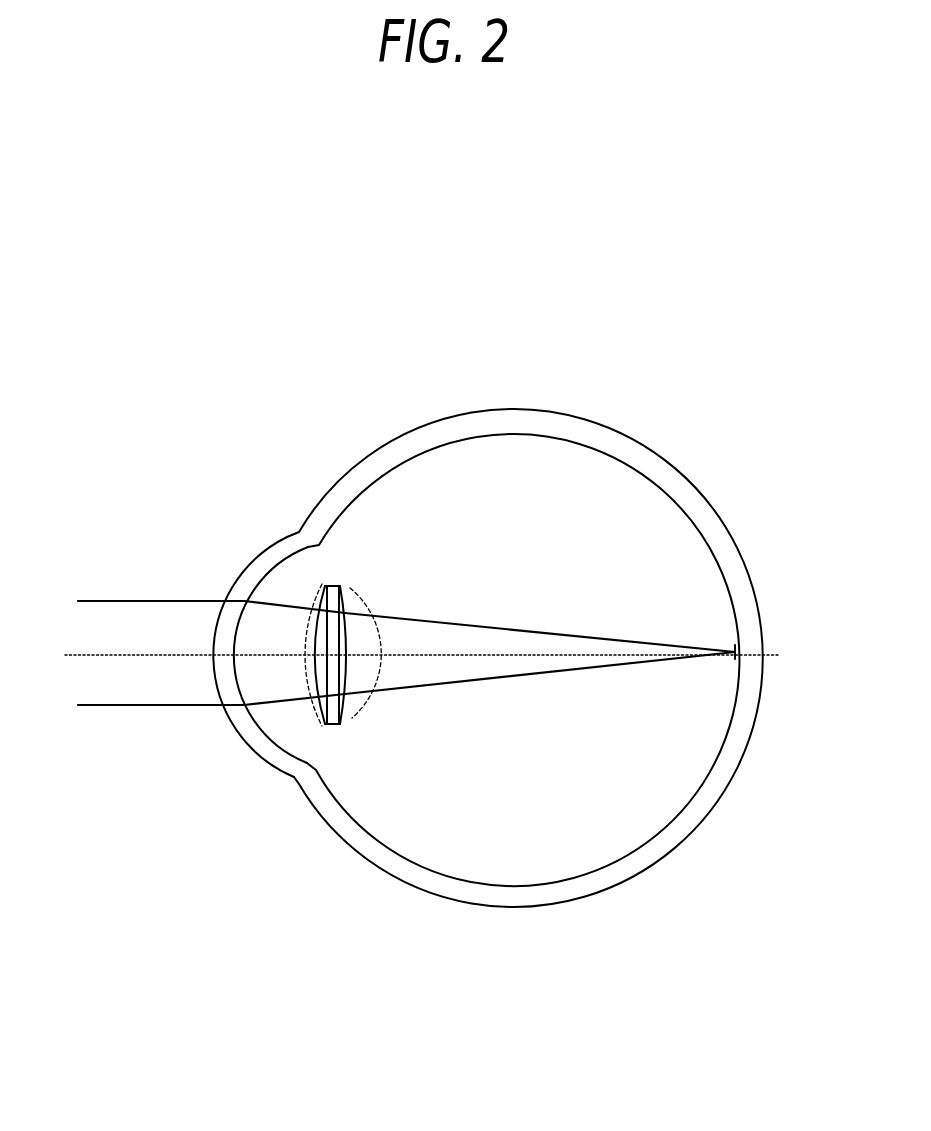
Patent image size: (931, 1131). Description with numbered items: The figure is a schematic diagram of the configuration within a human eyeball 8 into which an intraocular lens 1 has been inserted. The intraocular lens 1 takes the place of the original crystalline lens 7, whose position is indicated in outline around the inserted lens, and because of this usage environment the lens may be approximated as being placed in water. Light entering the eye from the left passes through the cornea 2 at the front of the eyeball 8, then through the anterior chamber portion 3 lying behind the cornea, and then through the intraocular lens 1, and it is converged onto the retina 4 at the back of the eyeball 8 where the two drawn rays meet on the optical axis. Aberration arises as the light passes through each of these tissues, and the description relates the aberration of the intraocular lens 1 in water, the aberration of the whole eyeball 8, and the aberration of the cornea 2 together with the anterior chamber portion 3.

The intraocular lens 1 is at (310, 622).
The cornea 2 is at (233, 650).
The anterior chamber portion 3 is at (268, 675).
The retina 4 is at (740, 640).
The crystalline lens 7 is at (350, 597).
The eyeball 8 is at (634, 400).